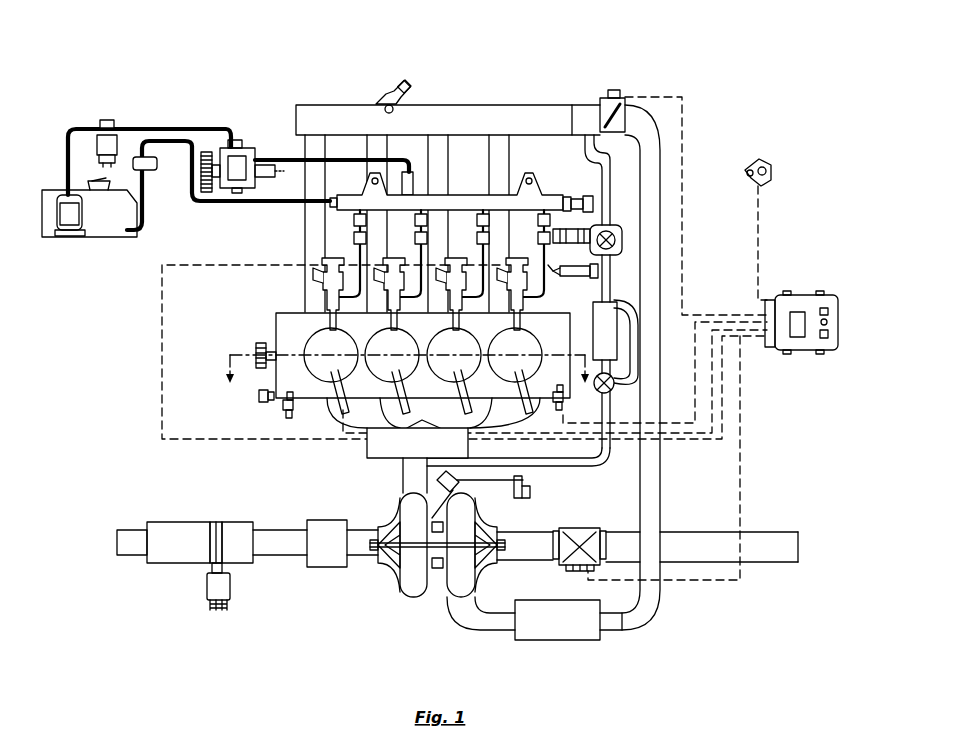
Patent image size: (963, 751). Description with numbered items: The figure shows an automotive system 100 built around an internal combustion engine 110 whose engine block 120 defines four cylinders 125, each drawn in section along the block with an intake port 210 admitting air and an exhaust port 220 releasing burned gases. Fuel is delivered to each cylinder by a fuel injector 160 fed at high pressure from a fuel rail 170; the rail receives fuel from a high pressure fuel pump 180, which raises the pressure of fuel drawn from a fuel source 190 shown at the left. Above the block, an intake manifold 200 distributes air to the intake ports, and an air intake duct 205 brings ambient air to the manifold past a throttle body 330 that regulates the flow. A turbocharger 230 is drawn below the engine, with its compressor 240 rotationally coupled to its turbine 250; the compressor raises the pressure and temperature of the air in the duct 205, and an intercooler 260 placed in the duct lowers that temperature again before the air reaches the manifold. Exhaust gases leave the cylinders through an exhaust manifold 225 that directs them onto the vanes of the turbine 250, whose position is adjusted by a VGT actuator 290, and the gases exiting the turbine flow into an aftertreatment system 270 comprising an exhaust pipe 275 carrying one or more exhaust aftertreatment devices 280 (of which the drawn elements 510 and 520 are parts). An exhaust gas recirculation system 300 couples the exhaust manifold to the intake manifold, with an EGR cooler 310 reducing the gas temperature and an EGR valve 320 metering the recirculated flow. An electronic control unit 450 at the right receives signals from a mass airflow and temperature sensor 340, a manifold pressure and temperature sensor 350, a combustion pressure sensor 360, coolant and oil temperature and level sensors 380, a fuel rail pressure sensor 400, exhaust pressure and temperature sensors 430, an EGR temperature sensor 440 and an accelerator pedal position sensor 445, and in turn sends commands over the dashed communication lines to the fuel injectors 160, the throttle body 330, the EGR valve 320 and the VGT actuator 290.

The automotive system 100 is at (214, 87).
The internal combustion engine 110 is at (524, 92).
The engine block 120 is at (270, 318).
The cylinder 125 is at (533, 337).
The fuel injector 160 is at (335, 295).
The fuel rail 170 is at (357, 205).
The high pressure fuel pump 180 is at (250, 143).
The fuel source 190 is at (110, 222).
The intake manifold 200 is at (441, 122).
The air intake duct 205 is at (657, 505).
The intake port 210 is at (300, 320).
The exhaust port 220 is at (328, 404).
The exhaust manifold 225 is at (333, 504).
The turbocharger 230 is at (434, 573).
The compressor 240 is at (465, 568).
The turbine 250 is at (410, 565).
The intercooler 260 is at (580, 627).
The aftertreatment system 270 is at (218, 567).
The exhaust pipe 275 is at (128, 545).
The exhaust aftertreatment device 280 is at (323, 547).
The VGT actuator 290 is at (457, 487).
The exhaust gas recirculation system 300 is at (578, 478).
The EGR cooler 310 is at (607, 347).
The EGR valve 320 is at (610, 218).
The throttle body 330 is at (615, 92).
The mass airflow and temperature sensor 340 is at (580, 569).
The manifold pressure and temperature sensor 350 is at (384, 95).
The combustion pressure sensor 360 is at (393, 450).
The coolant and oil temperature and level sensors 380 is at (287, 409).
The fuel rail pressure sensor 400 is at (590, 200).
The exhaust pressure and temperature sensors 430 is at (217, 613).
The EGR temperature sensor 440 is at (600, 262).
The accelerator pedal position sensor 445 is at (762, 162).
The electronic control unit 450 is at (807, 295).
The particulate filter 510 is at (238, 545).
The catalyst 520 is at (180, 540).